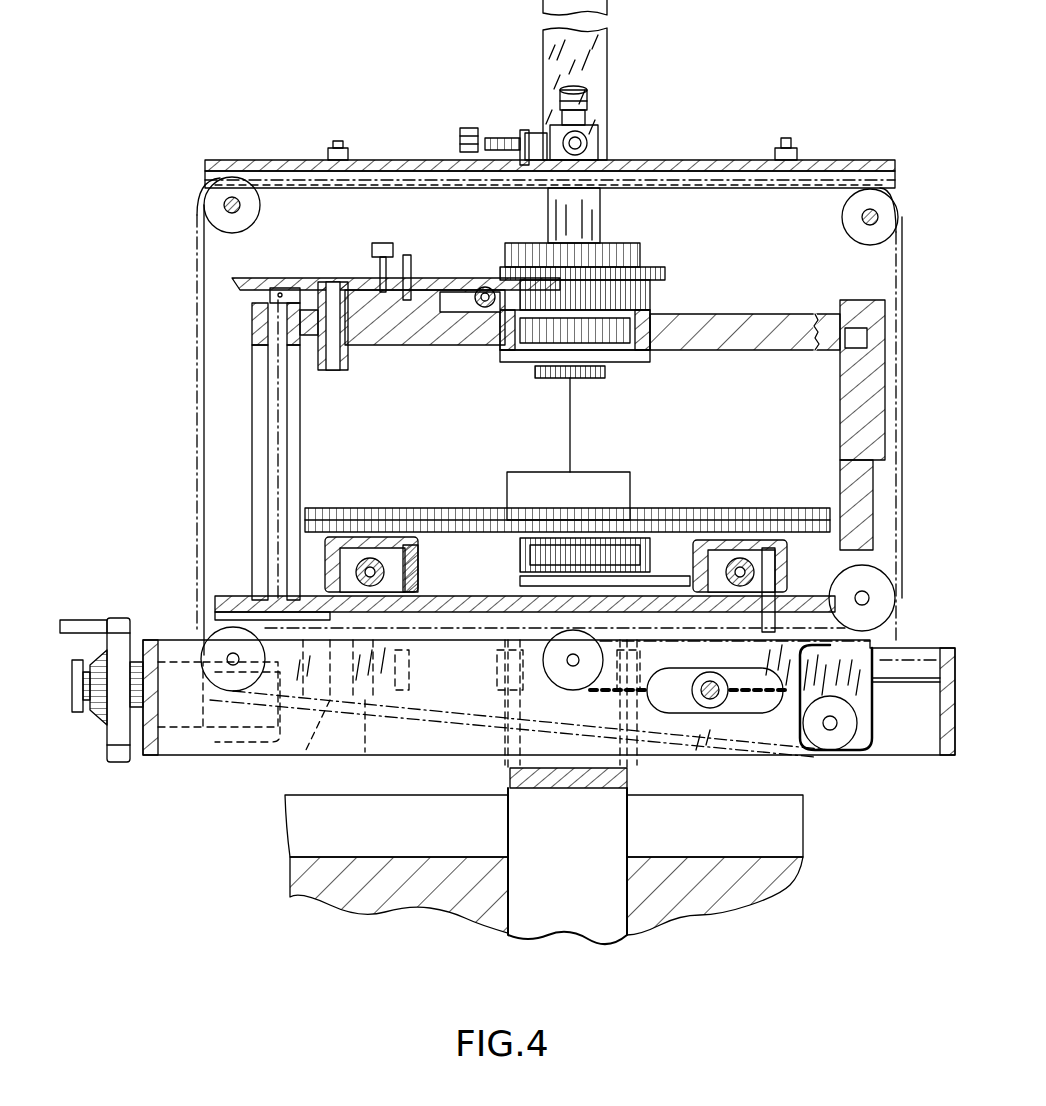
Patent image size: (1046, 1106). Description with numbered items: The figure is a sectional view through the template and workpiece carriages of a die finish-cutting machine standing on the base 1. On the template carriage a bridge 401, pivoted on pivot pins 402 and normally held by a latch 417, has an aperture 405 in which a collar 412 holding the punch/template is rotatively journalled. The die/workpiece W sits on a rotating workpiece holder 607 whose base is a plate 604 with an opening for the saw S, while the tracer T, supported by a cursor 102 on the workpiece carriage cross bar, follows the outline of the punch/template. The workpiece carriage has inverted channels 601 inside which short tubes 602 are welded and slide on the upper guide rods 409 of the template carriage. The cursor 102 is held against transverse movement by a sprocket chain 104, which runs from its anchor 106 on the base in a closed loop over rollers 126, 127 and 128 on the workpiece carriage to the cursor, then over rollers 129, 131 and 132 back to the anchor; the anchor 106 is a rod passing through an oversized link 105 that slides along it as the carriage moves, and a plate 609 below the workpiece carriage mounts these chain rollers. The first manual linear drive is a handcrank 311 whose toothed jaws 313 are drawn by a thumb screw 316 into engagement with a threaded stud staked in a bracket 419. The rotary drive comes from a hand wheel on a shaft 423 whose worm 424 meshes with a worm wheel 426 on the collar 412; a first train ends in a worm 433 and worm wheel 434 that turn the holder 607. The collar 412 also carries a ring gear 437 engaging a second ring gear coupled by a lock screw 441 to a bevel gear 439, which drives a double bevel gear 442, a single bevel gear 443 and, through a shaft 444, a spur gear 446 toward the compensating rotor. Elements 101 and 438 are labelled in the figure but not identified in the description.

The base 1 is at (288, 895).
The column 101 is at (500, 775).
The cursor 102 is at (600, 134).
The sprocket chain 104 is at (690, 200).
The oversized link 105 is at (687, 679).
The anchor 106 is at (700, 665).
The roller 126 is at (866, 733).
The roller 127 is at (212, 640).
The roller 128 is at (215, 203).
The roller 129 is at (893, 212).
The roller 131 is at (882, 585).
The roller 132 is at (568, 690).
The first handcrank 311 is at (120, 618).
The toothed jaws 313 is at (200, 740).
The thumb screw 316 is at (80, 715).
The bridge 401 is at (790, 345).
The pivot pins 402 is at (850, 298).
The aperture 405 is at (650, 350).
The upper guide rods 409 is at (375, 560).
The collar 412 is at (642, 255).
The latch 417 is at (310, 740).
The bracket 419 is at (365, 757).
The shaft 423 is at (500, 262).
The worm 424 is at (475, 285).
The worm wheel 426 is at (652, 297).
The worm 433 is at (560, 540).
The worm wheel 434 is at (600, 540).
The ring gear 437 is at (667, 275).
The arm 438 is at (297, 284).
The bevel gear 439 is at (378, 345).
The lock screw 441 is at (383, 243).
The double bevel gear 442 is at (343, 372).
The single bevel gear 443 is at (250, 278).
The shaft 444 is at (265, 380).
The spur gear 446 is at (215, 600).
The inverted channels 601 is at (415, 565).
The short tubes 602 is at (360, 540).
The plate 604 is at (665, 578).
The rotating workpiece holder 607 is at (470, 520).
The plate 609 is at (866, 705).
The saw S is at (572, 432).
The tracer T is at (580, 210).
The die/workpiece W is at (630, 482).